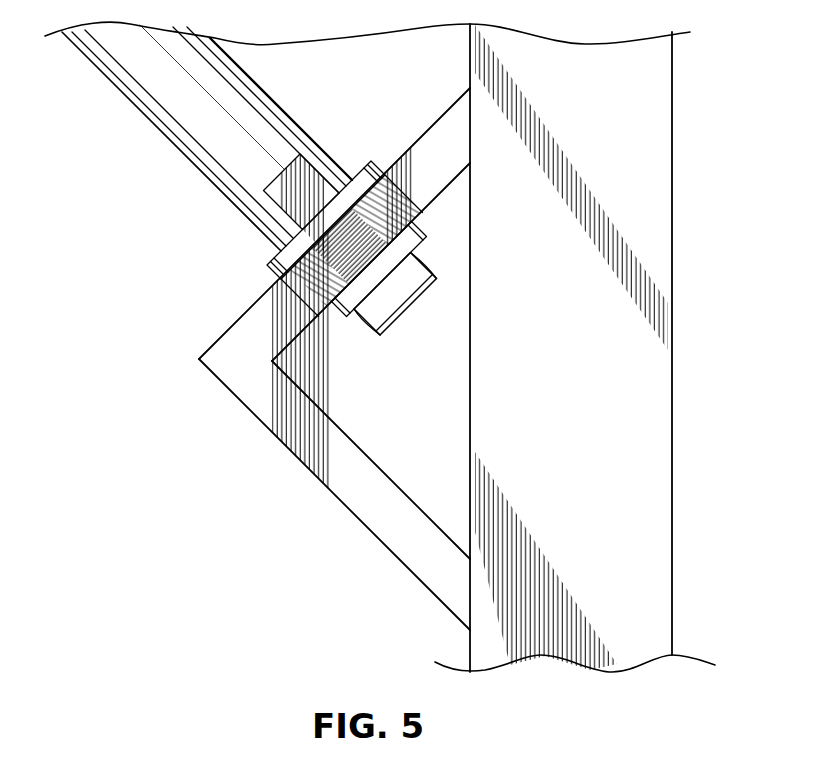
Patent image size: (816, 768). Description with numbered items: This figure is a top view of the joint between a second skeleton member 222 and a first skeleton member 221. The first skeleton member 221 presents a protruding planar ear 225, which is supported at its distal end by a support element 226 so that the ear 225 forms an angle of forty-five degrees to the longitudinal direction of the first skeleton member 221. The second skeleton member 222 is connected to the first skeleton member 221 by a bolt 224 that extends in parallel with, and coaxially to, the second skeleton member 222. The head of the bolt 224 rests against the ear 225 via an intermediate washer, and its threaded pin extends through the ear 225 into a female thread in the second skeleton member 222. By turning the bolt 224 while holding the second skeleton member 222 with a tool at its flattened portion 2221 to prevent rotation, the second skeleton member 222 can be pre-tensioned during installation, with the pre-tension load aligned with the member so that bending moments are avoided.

The first skeleton member 221 is at (672, 218).
The second skeleton member 222 is at (188, 146).
The flattened portion 2221 is at (306, 183).
The bolt 224 is at (375, 318).
The ear 225 is at (227, 333).
The support element 226 is at (303, 465).